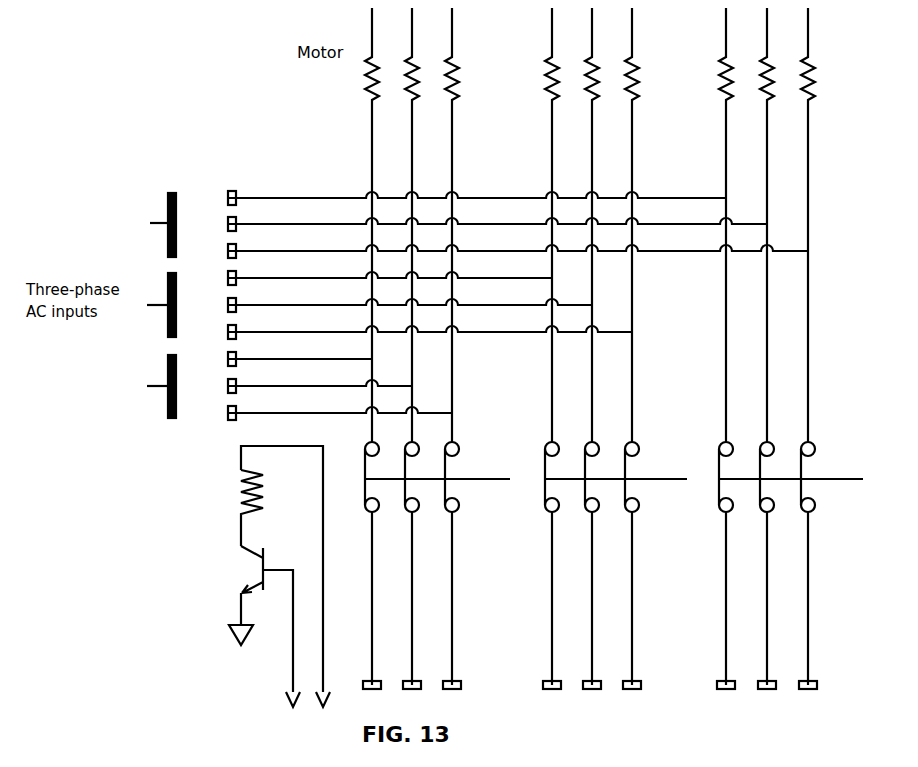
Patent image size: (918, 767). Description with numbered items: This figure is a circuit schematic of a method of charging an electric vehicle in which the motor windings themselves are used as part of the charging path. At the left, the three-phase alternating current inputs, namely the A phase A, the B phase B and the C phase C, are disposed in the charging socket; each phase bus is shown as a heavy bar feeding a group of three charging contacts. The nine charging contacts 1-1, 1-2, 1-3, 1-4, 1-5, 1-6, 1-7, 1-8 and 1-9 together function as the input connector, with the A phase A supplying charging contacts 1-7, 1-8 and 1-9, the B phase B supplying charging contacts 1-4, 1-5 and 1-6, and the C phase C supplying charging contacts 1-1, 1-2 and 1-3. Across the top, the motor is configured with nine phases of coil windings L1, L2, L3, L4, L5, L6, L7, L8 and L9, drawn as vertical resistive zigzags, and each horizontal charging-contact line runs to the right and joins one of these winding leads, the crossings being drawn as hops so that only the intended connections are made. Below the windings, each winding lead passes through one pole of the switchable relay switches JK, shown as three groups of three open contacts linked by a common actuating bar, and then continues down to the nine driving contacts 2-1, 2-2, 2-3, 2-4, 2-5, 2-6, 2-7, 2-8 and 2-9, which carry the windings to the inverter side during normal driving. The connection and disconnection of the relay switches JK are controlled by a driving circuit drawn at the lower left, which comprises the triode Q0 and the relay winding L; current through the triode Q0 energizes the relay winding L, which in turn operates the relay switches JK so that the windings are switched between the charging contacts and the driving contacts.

The coil winding L1 is at (361, 225).
The coil winding L2 is at (401, 225).
The coil winding L3 is at (440, 225).
The coil winding L4 is at (540, 225).
The coil winding L5 is at (582, 225).
The coil winding L6 is at (620, 225).
The coil winding L7 is at (707, 225).
The coil winding L8 is at (757, 225).
The coil winding L9 is at (798, 225).
The A phase A is at (155, 225).
The B phase B is at (153, 305).
The C phase C is at (153, 386).
The charging contact 1-1 is at (322, 413).
The charging contact 1-2 is at (302, 386).
The charging contact 1-3 is at (282, 359).
The charging contact 1-4 is at (412, 332).
The charging contact 1-5 is at (392, 305).
The charging contact 1-6 is at (372, 278).
The charging contact 1-7 is at (500, 251).
The charging contact 1-8 is at (479, 224).
The charging contact 1-9 is at (459, 198).
The relay switches JK is at (599, 471).
The driving contact 2-1 is at (370, 612).
The driving contact 2-2 is at (410, 612).
The driving contact 2-3 is at (450, 612).
The driving contact 2-4 is at (550, 612).
The driving contact 2-5 is at (590, 612).
The driving contact 2-6 is at (630, 612).
The driving contact 2-7 is at (724, 612).
The driving contact 2-8 is at (765, 612).
The driving contact 2-9 is at (806, 612).
The relay winding L is at (237, 508).
The triode Q0 is at (242, 585).